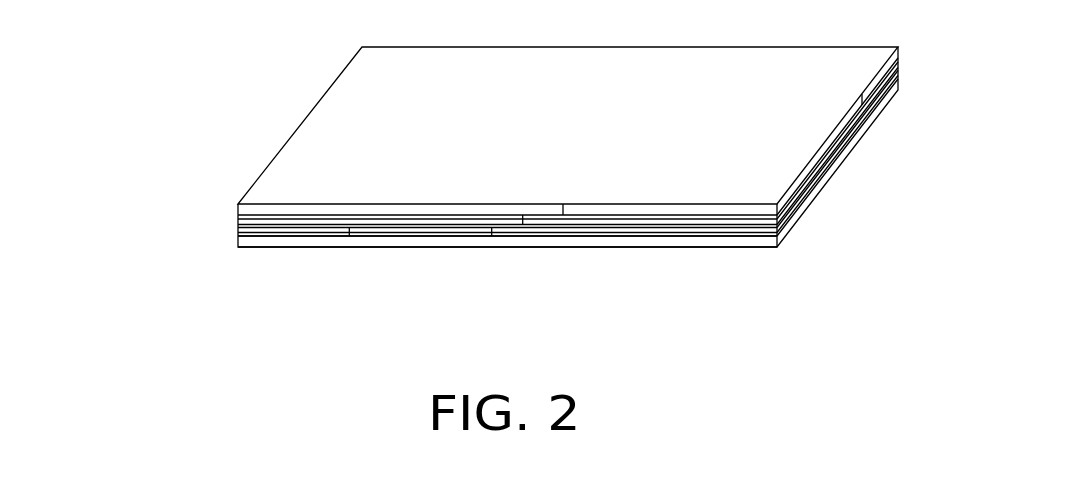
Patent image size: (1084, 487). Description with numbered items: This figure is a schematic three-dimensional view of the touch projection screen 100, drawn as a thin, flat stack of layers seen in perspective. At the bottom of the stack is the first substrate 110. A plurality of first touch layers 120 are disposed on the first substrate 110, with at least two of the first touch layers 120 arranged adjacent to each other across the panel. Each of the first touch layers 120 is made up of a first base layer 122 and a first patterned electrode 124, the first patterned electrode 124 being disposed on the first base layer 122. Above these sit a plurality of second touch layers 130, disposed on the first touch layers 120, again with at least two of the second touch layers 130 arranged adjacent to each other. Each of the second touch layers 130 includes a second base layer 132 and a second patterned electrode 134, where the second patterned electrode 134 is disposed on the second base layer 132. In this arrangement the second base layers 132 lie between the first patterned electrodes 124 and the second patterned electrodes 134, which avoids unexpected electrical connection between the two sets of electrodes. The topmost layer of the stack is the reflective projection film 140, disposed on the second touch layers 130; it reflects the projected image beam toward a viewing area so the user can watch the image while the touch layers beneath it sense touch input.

The touch projection screen 100 is at (497, 196).
The first substrate 110 is at (357, 241).
The first touch layers 120 is at (437, 264).
The first base layer 122 is at (238, 234).
The first patterned electrode 124 is at (238, 228).
The second touch layers 130 is at (437, 172).
The second base layer 132 is at (238, 222).
The second patterned electrode 134 is at (238, 216).
The reflective projection film 140 is at (563, 212).